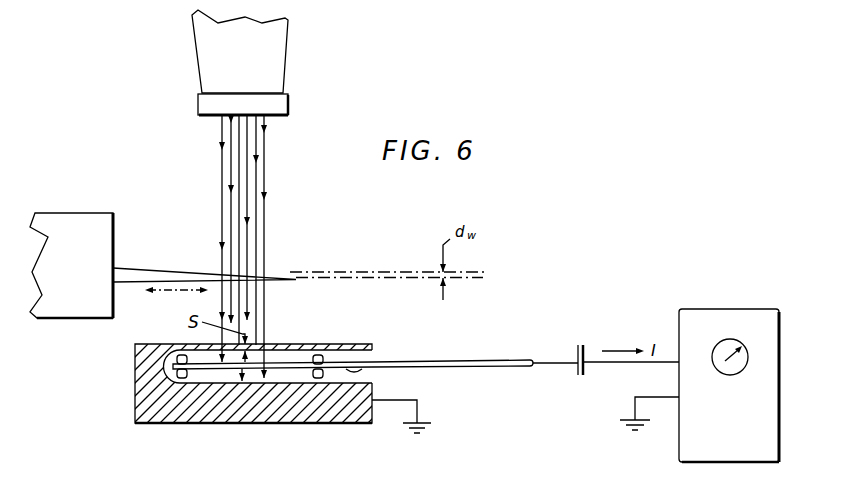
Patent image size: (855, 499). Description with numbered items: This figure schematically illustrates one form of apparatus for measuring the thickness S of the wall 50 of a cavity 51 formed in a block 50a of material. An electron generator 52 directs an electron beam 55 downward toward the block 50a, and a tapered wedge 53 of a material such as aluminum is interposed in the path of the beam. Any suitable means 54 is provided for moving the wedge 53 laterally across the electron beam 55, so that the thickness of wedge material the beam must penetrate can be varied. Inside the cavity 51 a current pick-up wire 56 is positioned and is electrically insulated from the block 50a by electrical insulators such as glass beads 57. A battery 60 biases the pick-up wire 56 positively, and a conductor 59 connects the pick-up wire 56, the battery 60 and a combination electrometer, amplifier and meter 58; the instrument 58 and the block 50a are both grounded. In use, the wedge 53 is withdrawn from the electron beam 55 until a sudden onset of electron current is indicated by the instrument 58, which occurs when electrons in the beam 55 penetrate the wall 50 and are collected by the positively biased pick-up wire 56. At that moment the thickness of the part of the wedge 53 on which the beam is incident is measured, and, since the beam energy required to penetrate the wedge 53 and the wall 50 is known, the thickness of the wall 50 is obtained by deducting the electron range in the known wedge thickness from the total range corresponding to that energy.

The wall 50 is at (350, 343).
The block 50a is at (293, 407).
The cavity 51 is at (360, 357).
The electron generator 52 is at (275, 62).
The tapered wedge 53 is at (188, 275).
The means for moving wedge 54 is at (92, 223).
The electron beam 55 is at (240, 192).
The current pick-up wire 56 is at (355, 373).
The glass beads 57 is at (319, 353).
The combination electrometer, amplifier and meter 58 is at (727, 318).
The conductor 59 is at (550, 361).
The battery 60 is at (582, 345).